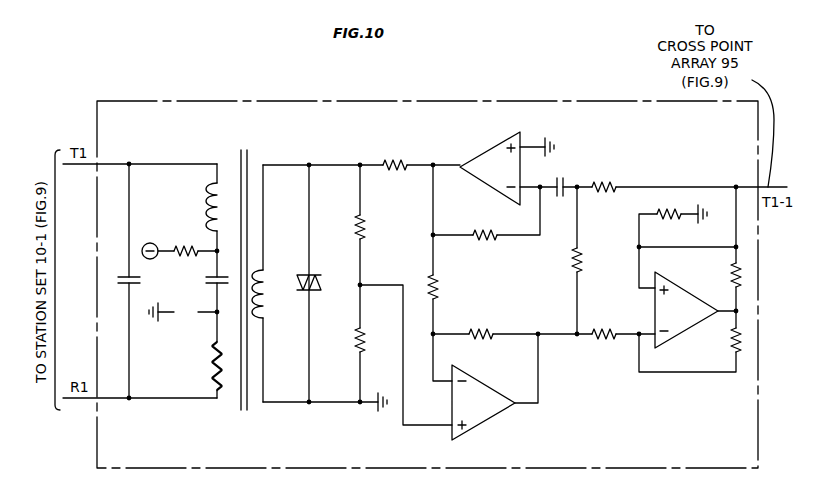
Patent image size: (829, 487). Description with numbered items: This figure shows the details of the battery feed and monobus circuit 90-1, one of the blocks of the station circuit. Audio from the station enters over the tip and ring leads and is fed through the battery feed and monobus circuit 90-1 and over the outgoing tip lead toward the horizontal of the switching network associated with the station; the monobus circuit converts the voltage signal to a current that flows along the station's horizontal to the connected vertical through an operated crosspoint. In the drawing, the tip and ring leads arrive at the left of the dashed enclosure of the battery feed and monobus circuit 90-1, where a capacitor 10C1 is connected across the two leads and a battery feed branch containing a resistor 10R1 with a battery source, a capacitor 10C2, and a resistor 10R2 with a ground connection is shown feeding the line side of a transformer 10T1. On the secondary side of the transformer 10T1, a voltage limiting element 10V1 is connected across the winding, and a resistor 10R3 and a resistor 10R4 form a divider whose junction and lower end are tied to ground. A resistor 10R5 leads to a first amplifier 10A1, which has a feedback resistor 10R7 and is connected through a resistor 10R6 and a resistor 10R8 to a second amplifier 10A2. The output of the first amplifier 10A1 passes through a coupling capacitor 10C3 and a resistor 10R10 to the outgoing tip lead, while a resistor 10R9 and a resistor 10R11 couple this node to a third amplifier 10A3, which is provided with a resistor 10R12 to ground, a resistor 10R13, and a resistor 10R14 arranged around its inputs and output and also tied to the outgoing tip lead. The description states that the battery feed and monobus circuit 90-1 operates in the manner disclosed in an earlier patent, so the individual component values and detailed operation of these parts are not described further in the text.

The battery feed and monobus circuit 90-1 is at (511, 101).
The capacitor 10C1 is at (126, 284).
The capacitor 10C2 is at (207, 282).
The coupling capacitor 10C3 is at (558, 182).
The battery feed resistor/inductor 10R1 is at (187, 240).
The battery feed resistor/inductor 10R2 is at (183, 318).
The resistor 10R3 is at (347, 232).
The resistor 10R4 is at (350, 344).
The resistor 10R5 is at (399, 173).
The resistor 10R6 is at (442, 286).
The feedback resistor 10R7 is at (485, 244).
The resistor 10R8 is at (480, 342).
The resistor 10R9 is at (582, 260).
The resistor 10R10 is at (603, 194).
The resistor 10R11 is at (606, 346).
The resistor 10R12 is at (671, 206).
The resistor 10R13 is at (731, 282).
The resistor 10R14 is at (741, 348).
The transformer 10T1 is at (241, 275).
The varistor / voltage limiter 10V1 is at (322, 286).
The operational amplifier 10A1 is at (488, 195).
The operational amplifier 10A2 is at (476, 427).
The operational amplifier 10A3 is at (696, 330).